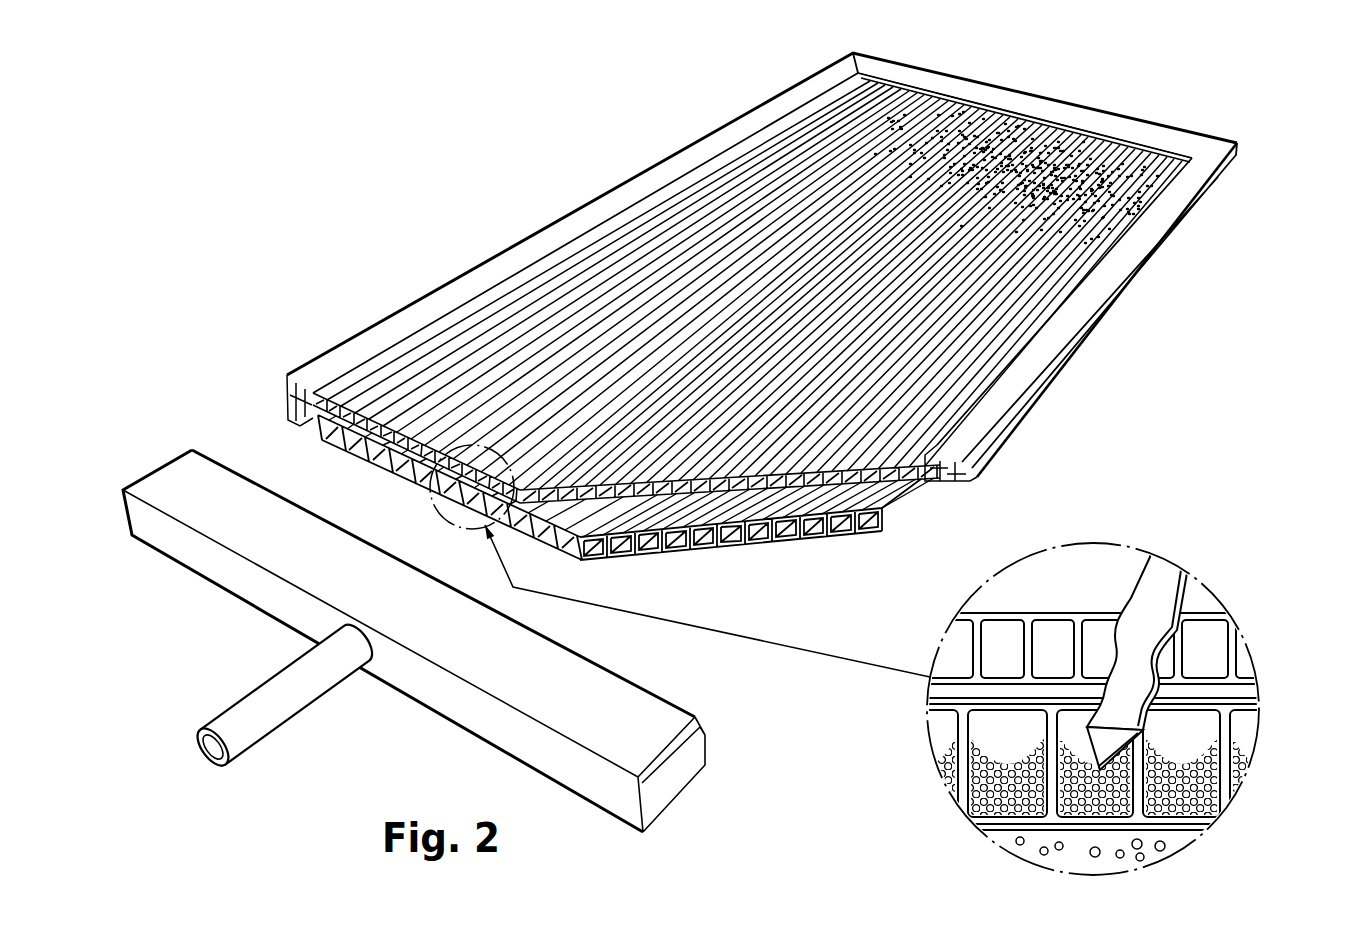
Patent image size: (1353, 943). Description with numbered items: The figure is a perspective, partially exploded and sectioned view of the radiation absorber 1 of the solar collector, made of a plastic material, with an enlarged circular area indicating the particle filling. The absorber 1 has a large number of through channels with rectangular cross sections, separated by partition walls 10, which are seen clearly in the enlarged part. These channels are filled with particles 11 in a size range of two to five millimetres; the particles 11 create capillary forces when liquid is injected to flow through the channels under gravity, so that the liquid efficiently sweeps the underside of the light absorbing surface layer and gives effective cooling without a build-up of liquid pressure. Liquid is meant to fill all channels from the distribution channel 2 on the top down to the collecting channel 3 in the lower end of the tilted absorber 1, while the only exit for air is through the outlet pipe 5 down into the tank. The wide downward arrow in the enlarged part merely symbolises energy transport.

The radiation absorber 1 is at (538, 220).
The distribution channel 2 is at (1030, 105).
The collecting channel 3 is at (232, 532).
The outlet pipe 5 is at (302, 692).
The partition walls 10 is at (330, 442).
The particles 11 is at (957, 790).